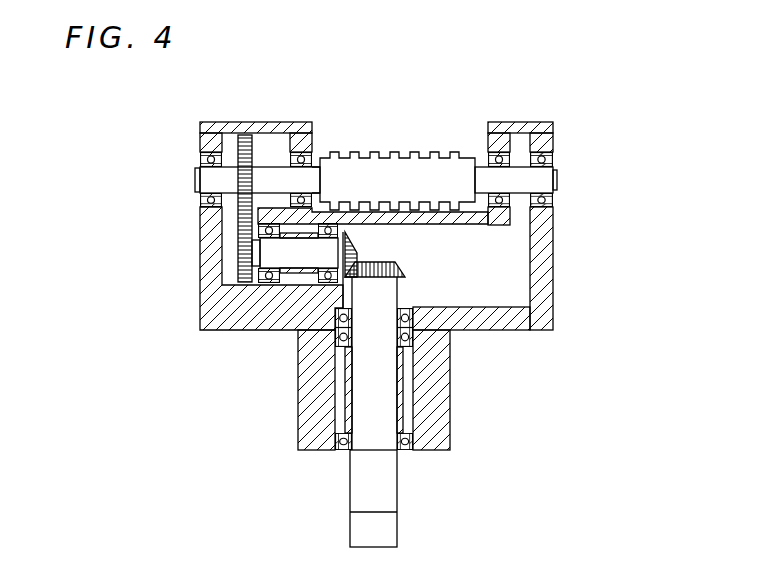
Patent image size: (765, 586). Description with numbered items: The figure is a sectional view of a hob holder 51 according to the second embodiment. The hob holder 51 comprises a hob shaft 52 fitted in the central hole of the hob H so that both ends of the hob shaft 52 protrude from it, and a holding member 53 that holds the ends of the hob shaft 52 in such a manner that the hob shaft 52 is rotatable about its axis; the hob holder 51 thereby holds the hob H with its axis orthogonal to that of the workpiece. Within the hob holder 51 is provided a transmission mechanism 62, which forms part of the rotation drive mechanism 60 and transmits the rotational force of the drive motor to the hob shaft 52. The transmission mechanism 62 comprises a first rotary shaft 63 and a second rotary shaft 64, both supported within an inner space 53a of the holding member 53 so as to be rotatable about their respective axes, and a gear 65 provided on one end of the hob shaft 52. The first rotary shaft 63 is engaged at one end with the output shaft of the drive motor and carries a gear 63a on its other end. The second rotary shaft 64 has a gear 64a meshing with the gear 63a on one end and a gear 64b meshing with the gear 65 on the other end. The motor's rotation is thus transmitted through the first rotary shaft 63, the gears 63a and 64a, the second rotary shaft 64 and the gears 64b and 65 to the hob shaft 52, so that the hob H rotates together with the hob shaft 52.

The hob holder 51 is at (547, 105).
The hob shaft 52 is at (317, 166).
The holding member 53 is at (548, 137).
The inner space 53a is at (488, 263).
The rotation drive mechanism 60 is at (300, 186).
The transmission mechanism 62 is at (224, 219).
The first rotary shaft 63 is at (358, 473).
The gear 63a is at (396, 266).
The second rotary shaft 64 is at (290, 262).
The gear 64a is at (357, 253).
The gear 64b is at (240, 255).
The gear 65 is at (203, 133).
The hob H is at (393, 152).